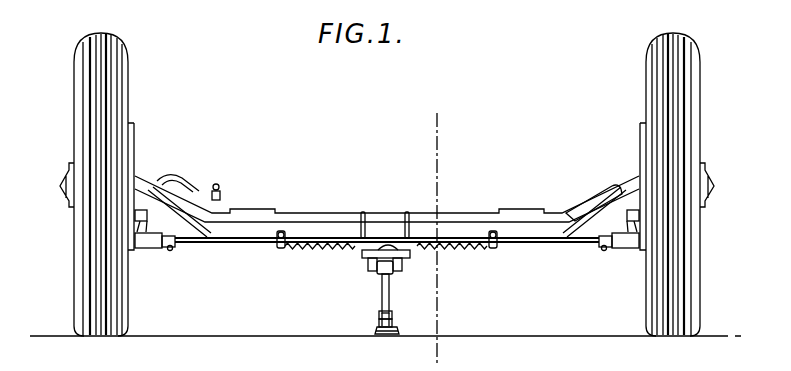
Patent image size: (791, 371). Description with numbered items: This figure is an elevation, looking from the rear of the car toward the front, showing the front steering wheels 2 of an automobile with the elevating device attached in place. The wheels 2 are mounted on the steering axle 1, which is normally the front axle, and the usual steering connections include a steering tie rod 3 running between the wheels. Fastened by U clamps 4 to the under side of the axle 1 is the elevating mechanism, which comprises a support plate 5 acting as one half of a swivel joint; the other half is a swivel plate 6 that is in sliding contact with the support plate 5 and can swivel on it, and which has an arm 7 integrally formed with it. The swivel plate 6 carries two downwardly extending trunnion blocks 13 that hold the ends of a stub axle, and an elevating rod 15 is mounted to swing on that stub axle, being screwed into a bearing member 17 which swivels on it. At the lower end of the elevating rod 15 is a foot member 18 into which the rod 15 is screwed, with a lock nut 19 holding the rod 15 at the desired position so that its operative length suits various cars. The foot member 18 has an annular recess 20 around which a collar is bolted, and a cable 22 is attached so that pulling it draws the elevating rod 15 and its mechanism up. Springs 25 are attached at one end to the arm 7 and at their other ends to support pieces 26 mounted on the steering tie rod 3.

The steering axle 1 is at (531, 212).
The steering wheels 2 is at (128, 83).
The steering tie rod 3 is at (444, 139).
The U clamps 4 is at (361, 214).
The support plate 5 is at (380, 246).
The swivel plate 6 is at (366, 258).
The arm 7 is at (404, 259).
The trunnion blocks 13 is at (403, 269).
The elevating rod 15 is at (390, 298).
The bearing member 17 is at (380, 313).
The foot member 18 is at (385, 337).
The lock nut 19 is at (380, 321).
The annular recess 20 is at (277, 245).
The cable 22 is at (392, 321).
The springs 25 is at (330, 250).
The support pieces 26 is at (497, 246).